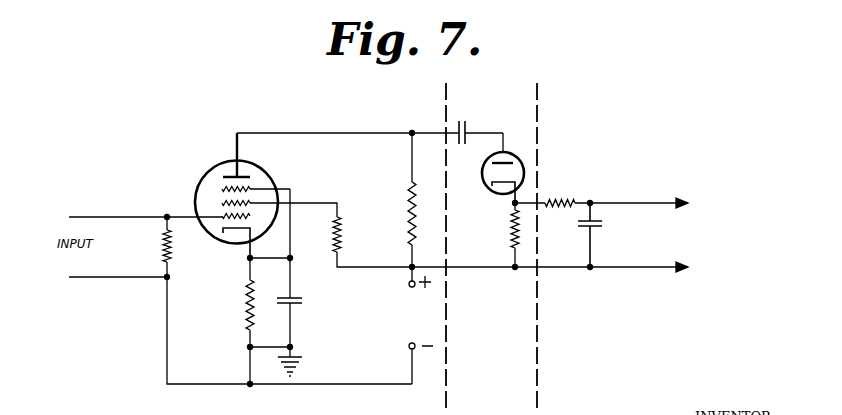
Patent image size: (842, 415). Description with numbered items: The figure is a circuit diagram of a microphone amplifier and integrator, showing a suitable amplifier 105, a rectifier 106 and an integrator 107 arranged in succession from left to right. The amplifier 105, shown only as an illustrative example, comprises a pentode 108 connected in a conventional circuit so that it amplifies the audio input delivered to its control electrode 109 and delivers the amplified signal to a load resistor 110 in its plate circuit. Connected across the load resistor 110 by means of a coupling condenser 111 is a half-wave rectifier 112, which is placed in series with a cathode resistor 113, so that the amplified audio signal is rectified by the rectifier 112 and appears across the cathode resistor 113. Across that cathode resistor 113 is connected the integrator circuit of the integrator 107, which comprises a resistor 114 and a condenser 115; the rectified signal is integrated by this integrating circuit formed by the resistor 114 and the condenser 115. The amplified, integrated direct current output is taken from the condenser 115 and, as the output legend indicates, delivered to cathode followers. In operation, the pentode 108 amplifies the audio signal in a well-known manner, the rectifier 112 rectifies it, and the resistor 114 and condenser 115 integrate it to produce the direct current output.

The amplifier 105 is at (330, 122).
The rectifier 106 is at (490, 115).
The integrator 107 is at (570, 121).
The pentode 108 is at (274, 178).
The control electrode 109 is at (222, 215).
The load resistor 110 is at (406, 211).
The coupling condenser 111 is at (467, 143).
The half-wave rectifier 112 is at (525, 172).
The cathode resistor 113 is at (510, 226).
The resistor 114 is at (578, 200).
The condenser 115 is at (583, 231).